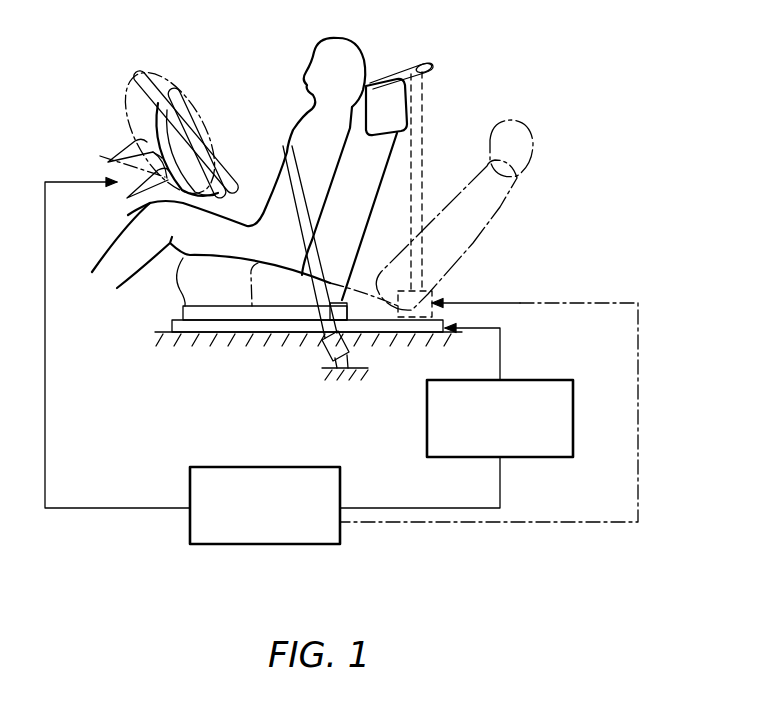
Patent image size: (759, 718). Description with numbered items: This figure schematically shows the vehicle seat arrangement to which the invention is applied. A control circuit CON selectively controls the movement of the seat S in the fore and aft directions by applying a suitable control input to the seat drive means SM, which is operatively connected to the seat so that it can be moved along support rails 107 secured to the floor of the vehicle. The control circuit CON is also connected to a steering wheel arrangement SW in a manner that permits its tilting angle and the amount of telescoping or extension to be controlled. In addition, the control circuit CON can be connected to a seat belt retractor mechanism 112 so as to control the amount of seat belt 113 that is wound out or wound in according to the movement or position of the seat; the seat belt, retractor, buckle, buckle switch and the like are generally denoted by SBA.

The support rails 107 is at (232, 317).
The seat belt retractor mechanism 112 is at (440, 292).
The seat belt 113 is at (400, 68).
The seat S is at (383, 142).
The seat belt arrangement SBA is at (284, 152).
The steering wheel arrangement SW is at (178, 111).
The seat drive means SM is at (543, 380).
The control circuit CON is at (341, 528).